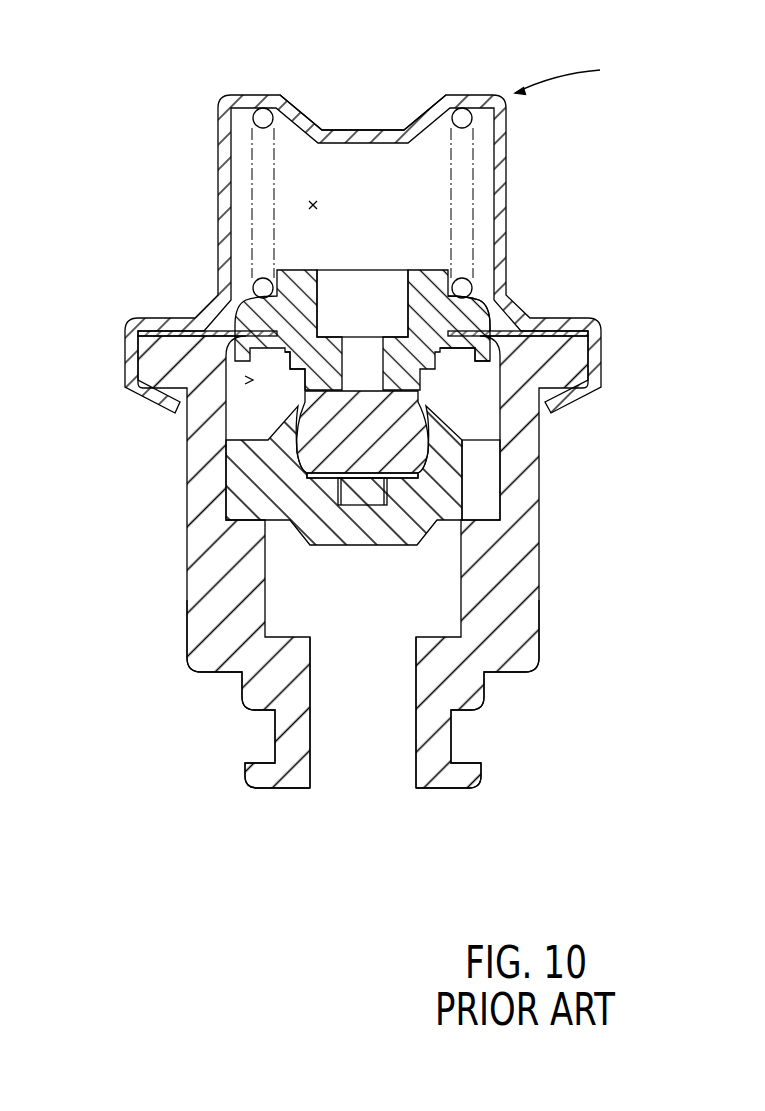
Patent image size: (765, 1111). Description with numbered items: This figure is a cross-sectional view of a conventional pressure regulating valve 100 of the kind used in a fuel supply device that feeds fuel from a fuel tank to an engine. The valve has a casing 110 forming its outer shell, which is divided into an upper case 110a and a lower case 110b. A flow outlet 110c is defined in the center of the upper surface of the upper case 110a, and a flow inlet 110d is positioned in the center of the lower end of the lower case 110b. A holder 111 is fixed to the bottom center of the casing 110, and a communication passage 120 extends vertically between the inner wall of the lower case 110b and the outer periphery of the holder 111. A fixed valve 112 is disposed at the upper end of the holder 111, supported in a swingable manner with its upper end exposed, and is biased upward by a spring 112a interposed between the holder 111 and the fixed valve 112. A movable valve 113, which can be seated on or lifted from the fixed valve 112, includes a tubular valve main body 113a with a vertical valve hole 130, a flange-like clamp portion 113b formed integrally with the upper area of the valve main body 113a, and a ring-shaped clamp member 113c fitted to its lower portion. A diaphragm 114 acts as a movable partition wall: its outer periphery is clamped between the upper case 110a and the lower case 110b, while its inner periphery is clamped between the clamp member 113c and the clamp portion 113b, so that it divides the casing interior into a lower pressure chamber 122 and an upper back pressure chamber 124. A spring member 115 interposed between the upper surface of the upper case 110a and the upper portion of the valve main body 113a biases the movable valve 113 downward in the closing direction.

The pressure regulating valve 100 is at (581, 74).
The casing 110 is at (602, 348).
The upper case 110a is at (503, 165).
The lower case 110b is at (525, 660).
The flow outlet 110c is at (362, 128).
The flow inlet 110d is at (360, 790).
The holder 111 is at (250, 492).
The fixed valve 112 is at (480, 497).
The spring 112a is at (388, 503).
The movable valve 113 is at (437, 268).
The valve main body 113a is at (305, 380).
The clamp portion 113b is at (487, 320).
The clamp member 113c is at (480, 372).
The diaphragm 114 is at (478, 322).
The spring member 115 is at (462, 107).
The communication passage 120 is at (408, 452).
The pressure chamber 122 is at (250, 380).
The back pressure chamber 124 is at (312, 205).
The valve hole 130 is at (345, 296).